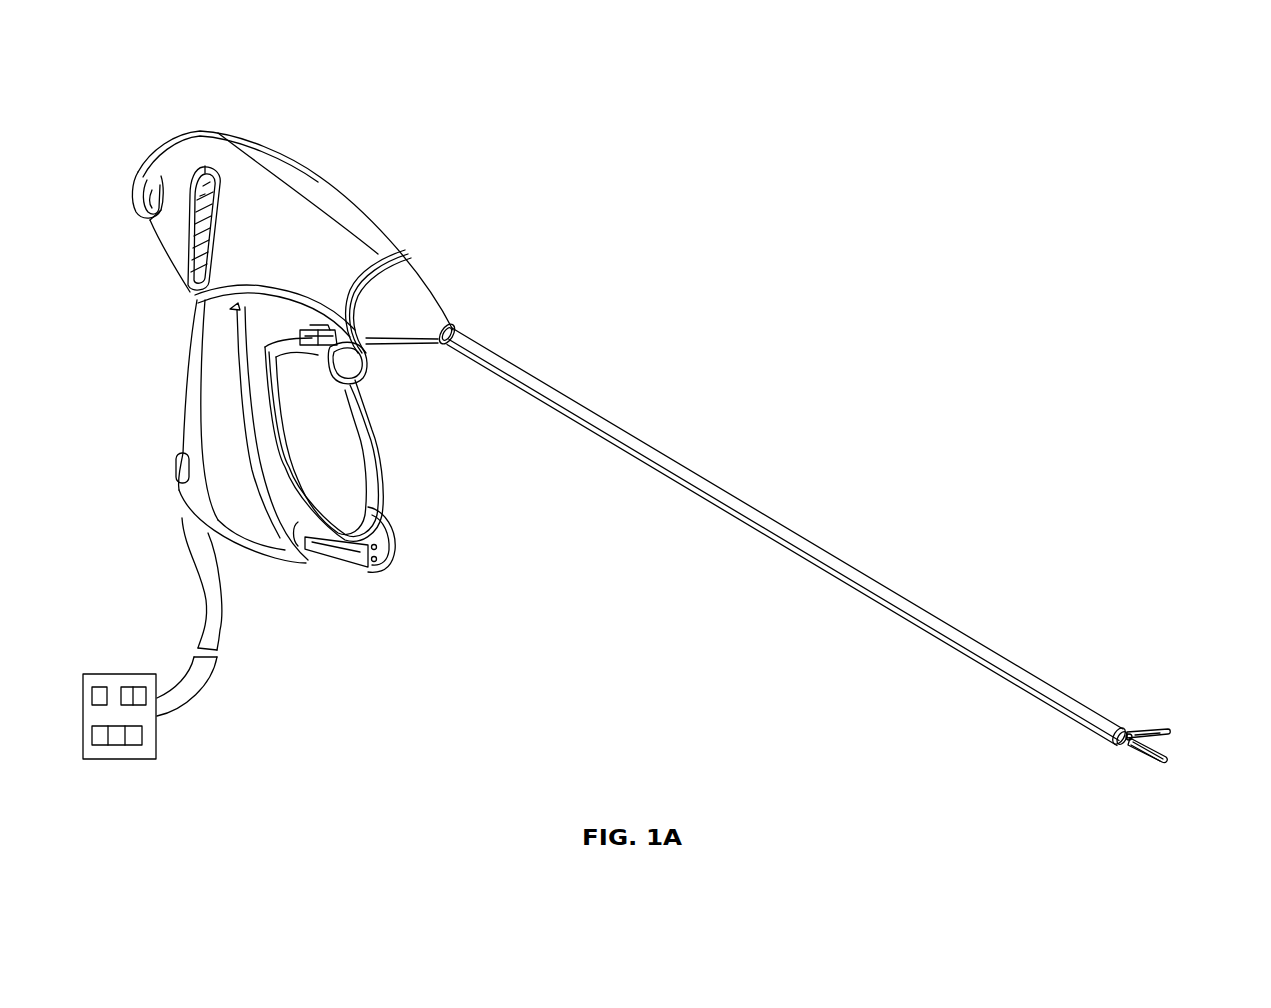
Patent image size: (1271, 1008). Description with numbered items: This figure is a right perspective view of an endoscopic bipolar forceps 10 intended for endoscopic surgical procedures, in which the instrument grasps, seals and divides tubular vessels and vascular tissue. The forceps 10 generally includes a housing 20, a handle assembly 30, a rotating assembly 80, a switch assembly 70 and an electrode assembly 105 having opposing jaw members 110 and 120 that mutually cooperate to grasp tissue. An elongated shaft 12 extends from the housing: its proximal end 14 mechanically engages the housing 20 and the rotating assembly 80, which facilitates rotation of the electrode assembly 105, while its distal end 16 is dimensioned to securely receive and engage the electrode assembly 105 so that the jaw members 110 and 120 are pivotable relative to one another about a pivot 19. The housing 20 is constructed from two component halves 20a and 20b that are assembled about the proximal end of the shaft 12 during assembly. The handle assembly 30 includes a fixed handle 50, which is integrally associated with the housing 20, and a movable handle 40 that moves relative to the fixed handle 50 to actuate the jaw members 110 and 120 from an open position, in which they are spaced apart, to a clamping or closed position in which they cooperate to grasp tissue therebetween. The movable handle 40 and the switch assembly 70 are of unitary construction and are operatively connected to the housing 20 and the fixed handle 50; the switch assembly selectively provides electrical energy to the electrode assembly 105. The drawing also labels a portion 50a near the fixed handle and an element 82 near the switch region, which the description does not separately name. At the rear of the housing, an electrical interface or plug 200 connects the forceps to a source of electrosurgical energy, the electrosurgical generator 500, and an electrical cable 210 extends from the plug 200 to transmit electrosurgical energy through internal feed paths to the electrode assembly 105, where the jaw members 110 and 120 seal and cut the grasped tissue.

The bipolar forceps 10 is at (824, 381).
The shaft 12 is at (780, 524).
The proximal end 14 is at (455, 330).
The distal end 16 is at (1112, 724).
The pivot 19 is at (1124, 742).
The housing 20 is at (337, 156).
The component half 20a is at (330, 216).
The component half 20b is at (392, 236).
The handle assembly 30 is at (399, 486).
The movable handle 40 is at (358, 440).
The fixed handle 50 is at (301, 568).
The fixed handle portion 50a is at (228, 520).
The switch assembly 70 is at (377, 366).
The rotating assembly 80 is at (200, 164).
The switch button 82 is at (209, 172).
The electrode assembly 105 is at (1167, 720).
The jaw member 110 is at (1168, 732).
The jaw member 120 is at (1155, 762).
The electrical interface or plug 200 is at (135, 188).
The electrical cable 210 is at (217, 620).
The electrosurgical generator 500 is at (152, 741).